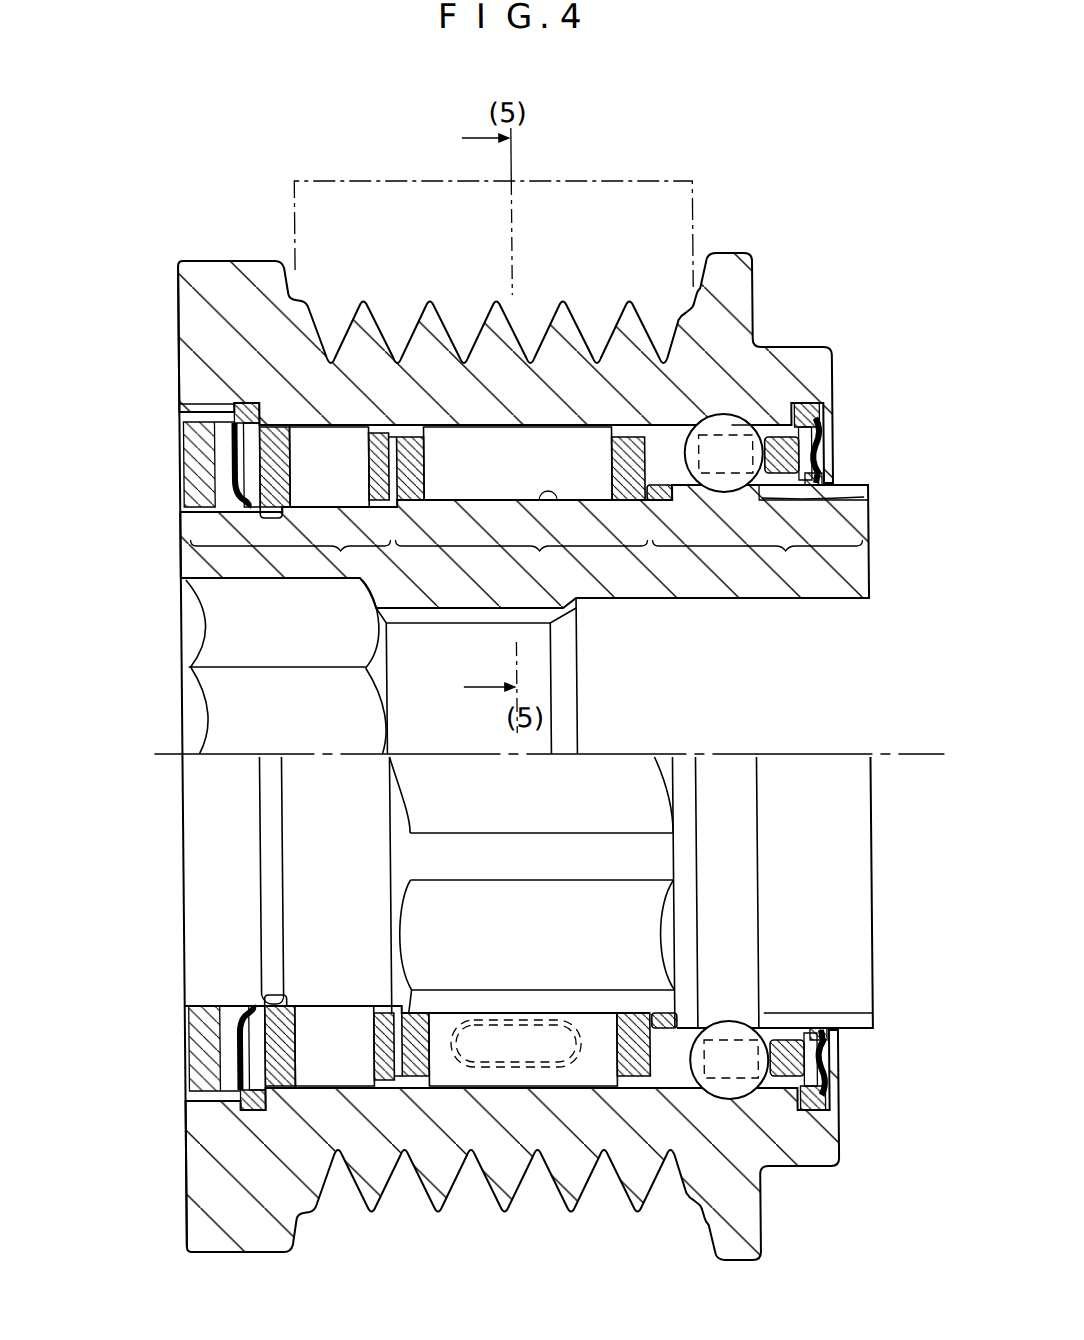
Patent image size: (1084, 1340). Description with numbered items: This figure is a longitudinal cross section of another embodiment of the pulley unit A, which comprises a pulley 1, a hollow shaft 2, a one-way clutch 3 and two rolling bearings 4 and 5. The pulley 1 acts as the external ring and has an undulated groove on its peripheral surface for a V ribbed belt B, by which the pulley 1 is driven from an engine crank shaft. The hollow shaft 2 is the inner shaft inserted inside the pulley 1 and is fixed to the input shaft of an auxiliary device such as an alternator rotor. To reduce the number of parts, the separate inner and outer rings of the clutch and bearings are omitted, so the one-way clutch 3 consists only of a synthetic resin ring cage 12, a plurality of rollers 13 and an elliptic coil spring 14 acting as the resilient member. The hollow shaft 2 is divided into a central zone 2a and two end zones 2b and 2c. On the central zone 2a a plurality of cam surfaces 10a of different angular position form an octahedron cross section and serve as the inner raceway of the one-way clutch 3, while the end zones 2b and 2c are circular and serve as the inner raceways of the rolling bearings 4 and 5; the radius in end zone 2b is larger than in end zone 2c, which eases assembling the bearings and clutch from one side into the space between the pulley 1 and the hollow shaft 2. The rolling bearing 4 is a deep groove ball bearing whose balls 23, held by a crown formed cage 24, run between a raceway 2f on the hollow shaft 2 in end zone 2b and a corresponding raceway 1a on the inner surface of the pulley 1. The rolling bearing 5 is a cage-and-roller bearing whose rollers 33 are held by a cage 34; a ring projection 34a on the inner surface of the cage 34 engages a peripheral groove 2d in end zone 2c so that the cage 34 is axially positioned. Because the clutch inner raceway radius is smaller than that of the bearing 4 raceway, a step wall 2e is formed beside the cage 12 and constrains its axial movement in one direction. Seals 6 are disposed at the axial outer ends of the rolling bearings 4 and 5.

The pulley 1 is at (722, 312).
The raceway 1a is at (743, 424).
The hollow shaft 2 is at (860, 565).
The central zone 2a is at (522, 560).
The end zone 2b is at (758, 560).
The end zone 2c is at (291, 560).
The peripheral groove 2d is at (278, 516).
The step wall 2e is at (657, 505).
The raceway 2f is at (862, 497).
The one-way clutch 3 is at (556, 655).
The rolling bearing 4 is at (809, 697).
The rolling bearing 5 is at (341, 643).
The seal 6 is at (232, 452).
The cam surfaces 10a is at (556, 507).
The synthetic resin ring cage 12 is at (625, 460).
The rollers 13 is at (478, 457).
The elliptic coil spring 14 is at (536, 1020).
The balls 23 is at (682, 452).
The crown formed cage 24 is at (780, 457).
The rollers 33 is at (343, 440).
The cage 34 is at (382, 447).
The ring projection 34a is at (262, 517).
The pulley unit A is at (770, 243).
The V ribbed belt B is at (638, 180).